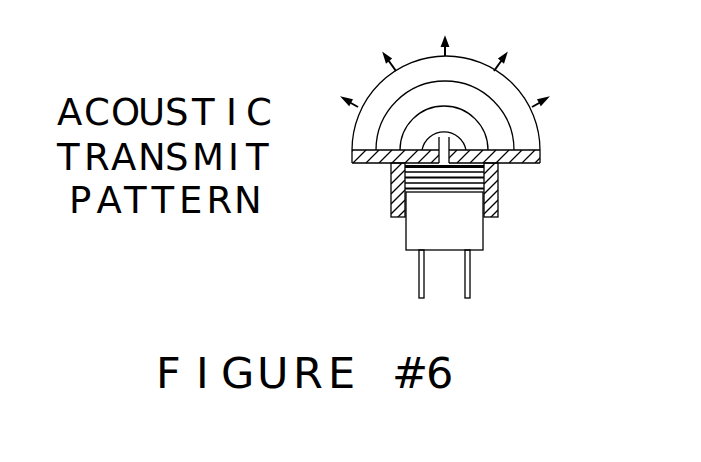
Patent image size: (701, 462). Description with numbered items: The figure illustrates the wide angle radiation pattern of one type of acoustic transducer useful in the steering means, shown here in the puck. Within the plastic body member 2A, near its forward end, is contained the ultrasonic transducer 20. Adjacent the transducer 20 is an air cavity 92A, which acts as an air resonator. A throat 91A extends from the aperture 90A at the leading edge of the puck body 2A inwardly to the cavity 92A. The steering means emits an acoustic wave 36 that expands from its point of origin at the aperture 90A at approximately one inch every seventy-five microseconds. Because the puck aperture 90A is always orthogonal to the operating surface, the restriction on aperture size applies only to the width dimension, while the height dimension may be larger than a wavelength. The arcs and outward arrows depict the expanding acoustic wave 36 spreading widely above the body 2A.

The acoustic wave 36 is at (445, 82).
The aperture 90A is at (376, 105).
The throat 91A is at (525, 114).
The cavity 92A is at (487, 167).
The plastic body member 2A is at (380, 166).
The ultrasonic transducer 20 is at (468, 237).